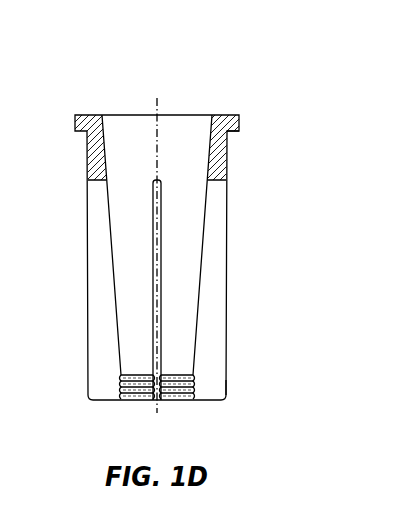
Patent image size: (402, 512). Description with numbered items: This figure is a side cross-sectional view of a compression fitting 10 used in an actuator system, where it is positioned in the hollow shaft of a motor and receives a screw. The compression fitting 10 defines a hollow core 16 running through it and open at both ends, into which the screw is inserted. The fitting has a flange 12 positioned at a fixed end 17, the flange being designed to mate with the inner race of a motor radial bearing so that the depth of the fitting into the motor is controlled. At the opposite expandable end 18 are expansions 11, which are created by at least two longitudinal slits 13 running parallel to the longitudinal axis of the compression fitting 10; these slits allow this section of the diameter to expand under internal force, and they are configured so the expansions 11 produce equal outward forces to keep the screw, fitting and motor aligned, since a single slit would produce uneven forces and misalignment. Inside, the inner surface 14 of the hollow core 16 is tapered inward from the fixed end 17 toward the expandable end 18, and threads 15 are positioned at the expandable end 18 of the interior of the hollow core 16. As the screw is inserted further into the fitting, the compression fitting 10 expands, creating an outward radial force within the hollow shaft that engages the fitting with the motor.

The compression fitting 10 is at (263, 74).
The expansions 11 is at (98, 312).
The flange 12 is at (239, 128).
The longitudinal slits 13 is at (153, 356).
The inner surface 14 is at (112, 249).
The threads 15 is at (170, 387).
The hollow core 16 is at (127, 148).
The fixed end 17 is at (272, 133).
The expandable end 18 is at (247, 373).